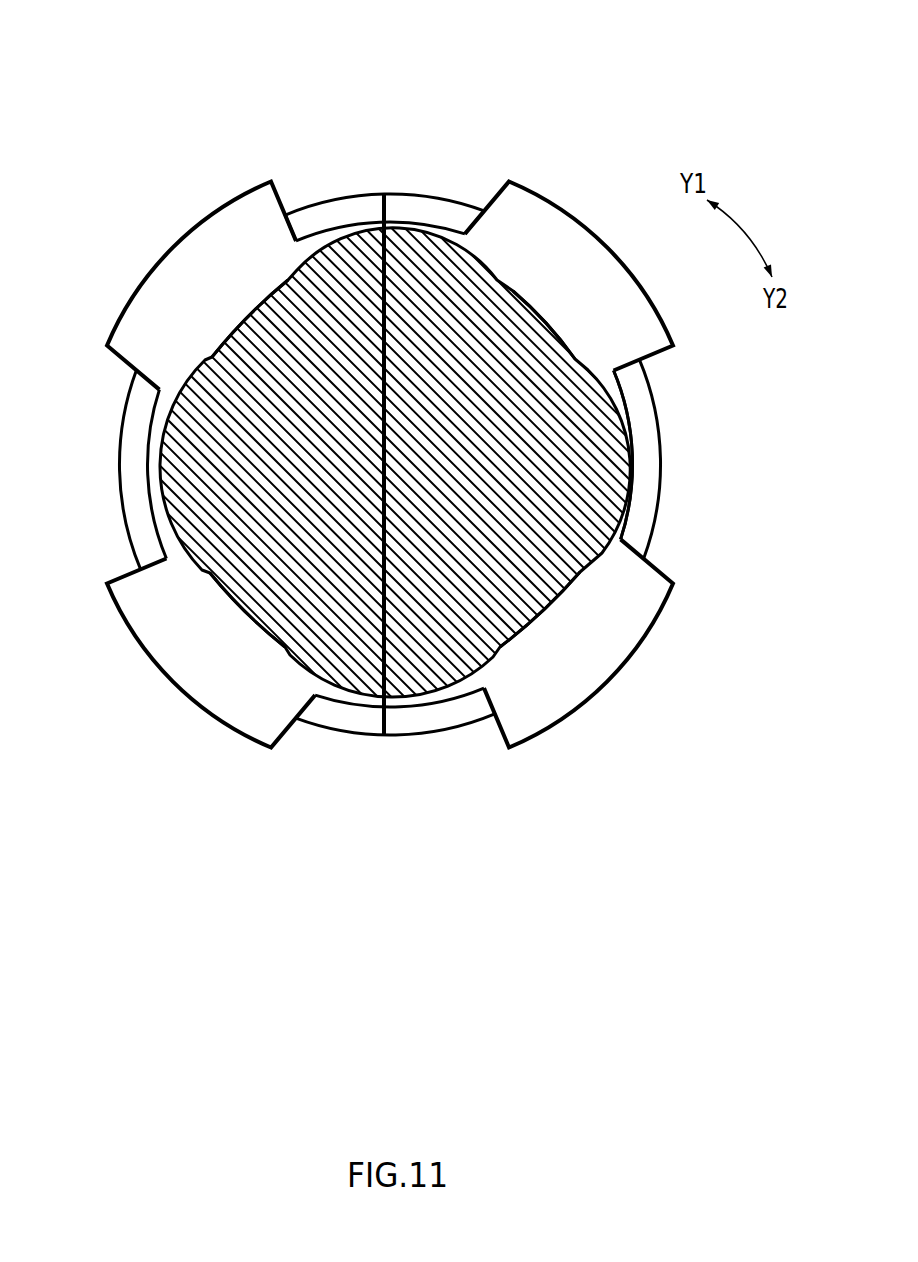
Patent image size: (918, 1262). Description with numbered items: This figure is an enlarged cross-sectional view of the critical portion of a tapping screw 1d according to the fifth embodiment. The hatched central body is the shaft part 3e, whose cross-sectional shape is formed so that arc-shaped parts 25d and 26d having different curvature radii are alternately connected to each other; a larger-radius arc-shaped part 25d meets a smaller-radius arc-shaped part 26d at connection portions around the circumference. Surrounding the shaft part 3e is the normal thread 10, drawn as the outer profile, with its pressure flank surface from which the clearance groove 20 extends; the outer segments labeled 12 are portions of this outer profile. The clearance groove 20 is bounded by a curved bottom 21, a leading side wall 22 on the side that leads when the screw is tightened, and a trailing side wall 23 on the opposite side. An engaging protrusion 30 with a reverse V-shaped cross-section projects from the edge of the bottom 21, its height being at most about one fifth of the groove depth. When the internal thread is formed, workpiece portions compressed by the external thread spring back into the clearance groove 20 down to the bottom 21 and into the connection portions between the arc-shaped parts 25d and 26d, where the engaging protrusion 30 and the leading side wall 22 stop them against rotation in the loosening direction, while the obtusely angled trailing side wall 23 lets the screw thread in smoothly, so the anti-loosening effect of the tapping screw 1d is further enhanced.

The tapping screw 1d is at (459, 393).
The normal thread 10 is at (385, 422).
The stator core yoke portion 12 is at (208, 233).
The clearance groove 20 is at (389, 416).
The bottom 21 is at (437, 223).
The leading side wall 22 is at (292, 213).
The trailing side wall 23 is at (480, 202).
The engaging protrusion 30 is at (352, 212).
The arc-shaped part 25d is at (560, 331).
The arc-shaped part 26d is at (623, 403).
The shaft part 3e is at (459, 500).